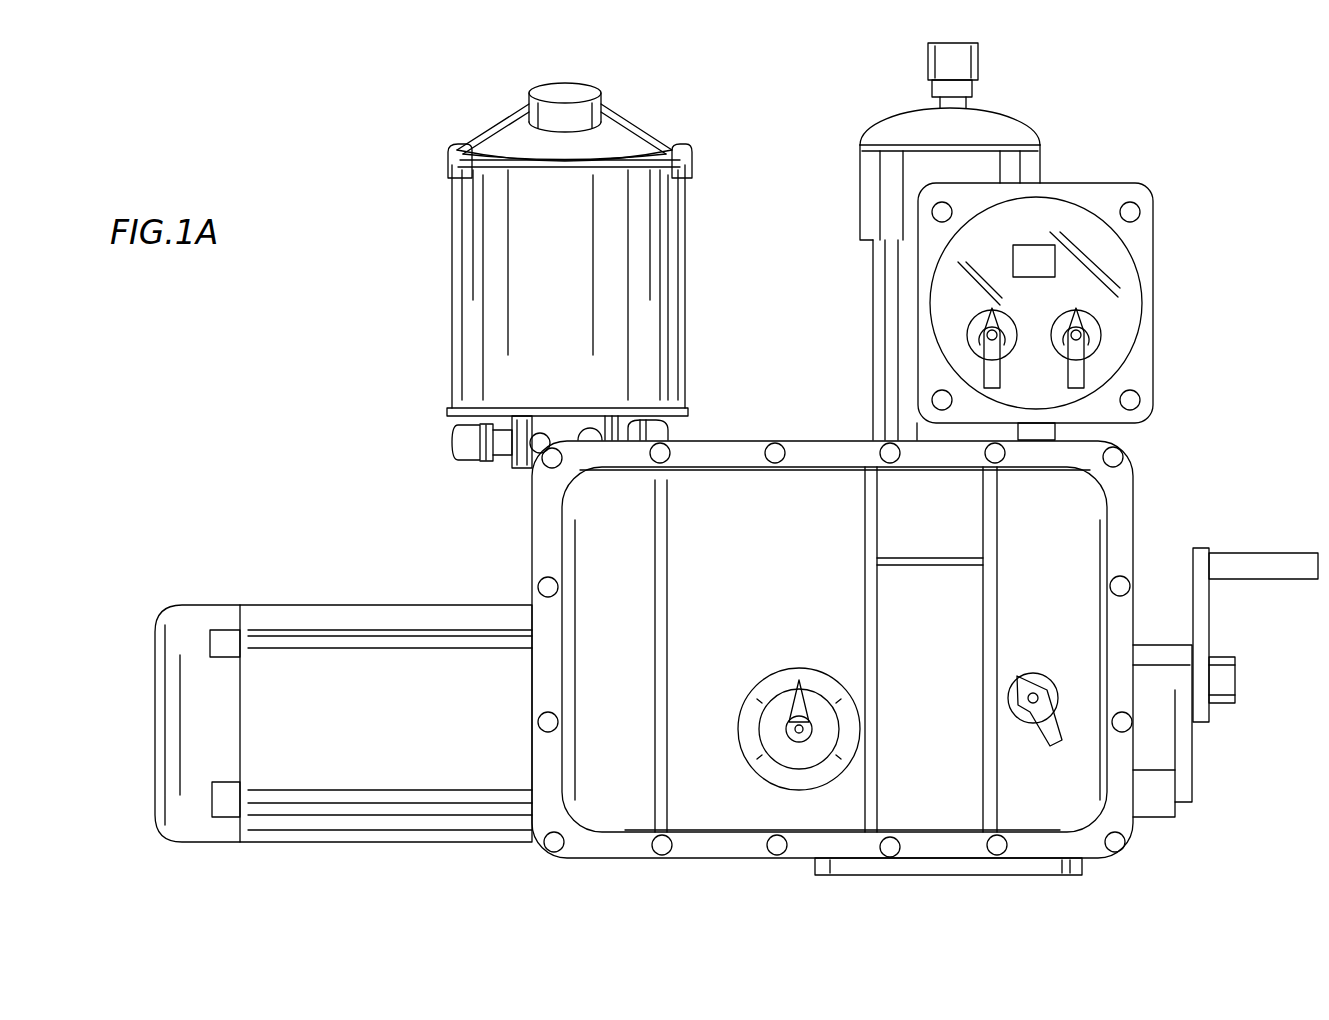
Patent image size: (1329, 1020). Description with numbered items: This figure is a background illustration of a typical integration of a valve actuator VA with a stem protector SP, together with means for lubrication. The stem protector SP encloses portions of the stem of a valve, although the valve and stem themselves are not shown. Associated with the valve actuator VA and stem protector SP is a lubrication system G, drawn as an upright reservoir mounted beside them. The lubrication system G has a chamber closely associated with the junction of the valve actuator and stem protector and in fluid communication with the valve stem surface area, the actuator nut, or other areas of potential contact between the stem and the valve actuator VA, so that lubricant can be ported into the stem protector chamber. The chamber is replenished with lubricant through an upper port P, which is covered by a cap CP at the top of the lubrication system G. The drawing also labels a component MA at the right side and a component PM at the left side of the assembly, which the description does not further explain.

The gas generator G is at (496, 80).
The cover plate CP is at (530, 97).
The plug P is at (600, 125).
The surge pot SP is at (852, 308).
The valve assembly VA is at (1132, 166).
The manual actuator MA is at (1200, 548).
The pump motor PM is at (340, 602).